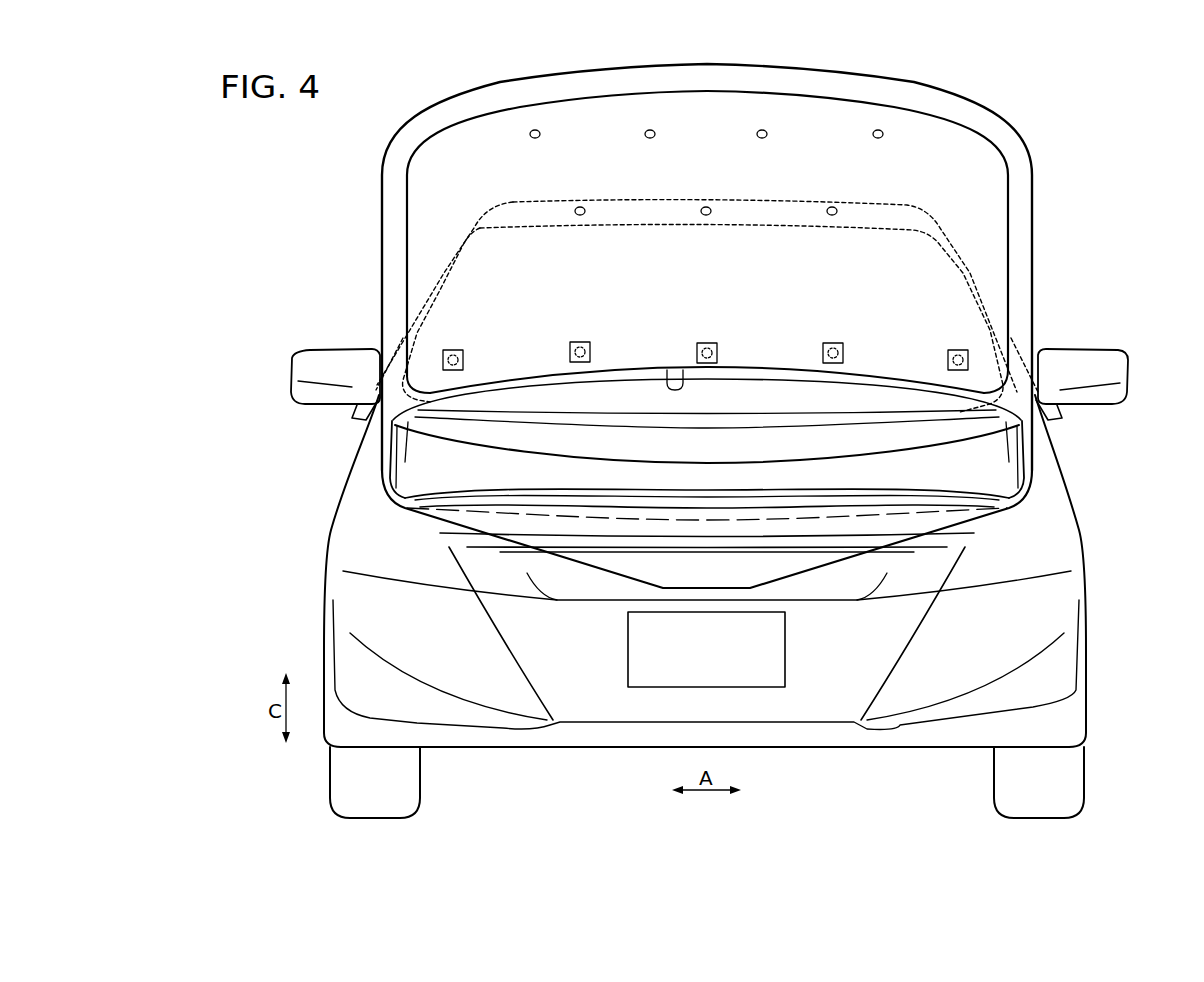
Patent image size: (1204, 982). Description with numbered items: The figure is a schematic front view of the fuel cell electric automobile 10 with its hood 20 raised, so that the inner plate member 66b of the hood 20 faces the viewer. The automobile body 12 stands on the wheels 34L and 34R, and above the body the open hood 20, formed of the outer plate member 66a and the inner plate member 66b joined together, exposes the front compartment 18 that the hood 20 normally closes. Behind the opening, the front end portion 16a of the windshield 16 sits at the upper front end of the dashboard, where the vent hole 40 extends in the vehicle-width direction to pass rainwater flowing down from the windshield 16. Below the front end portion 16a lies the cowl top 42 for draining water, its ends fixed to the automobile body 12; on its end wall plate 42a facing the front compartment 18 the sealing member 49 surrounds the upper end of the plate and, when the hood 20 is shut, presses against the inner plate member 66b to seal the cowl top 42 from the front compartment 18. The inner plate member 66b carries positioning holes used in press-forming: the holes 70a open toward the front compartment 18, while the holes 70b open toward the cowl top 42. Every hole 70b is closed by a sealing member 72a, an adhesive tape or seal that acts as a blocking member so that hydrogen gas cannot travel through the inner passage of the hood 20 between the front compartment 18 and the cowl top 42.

The fuel cell electric automobile 10 is at (1071, 146).
The automobile body 12 is at (1090, 496).
The windshield 16 is at (990, 316).
The front end portion of the windshield 16a is at (676, 366).
The front compartment 18 is at (442, 312).
The hood 20 is at (374, 157).
The wheel 34R is at (340, 780).
The wheel 34L is at (1073, 780).
The vent hole 40 is at (520, 468).
The cowl top 42 is at (785, 468).
The end wall plate 42a is at (588, 553).
The sealing member 49 is at (572, 528).
The outer plate member 66a is at (393, 187).
The inner plate member 66b is at (427, 203).
The holes 70a is at (534, 139).
The holes 70b is at (580, 341).
The sealing members 72a is at (592, 352).